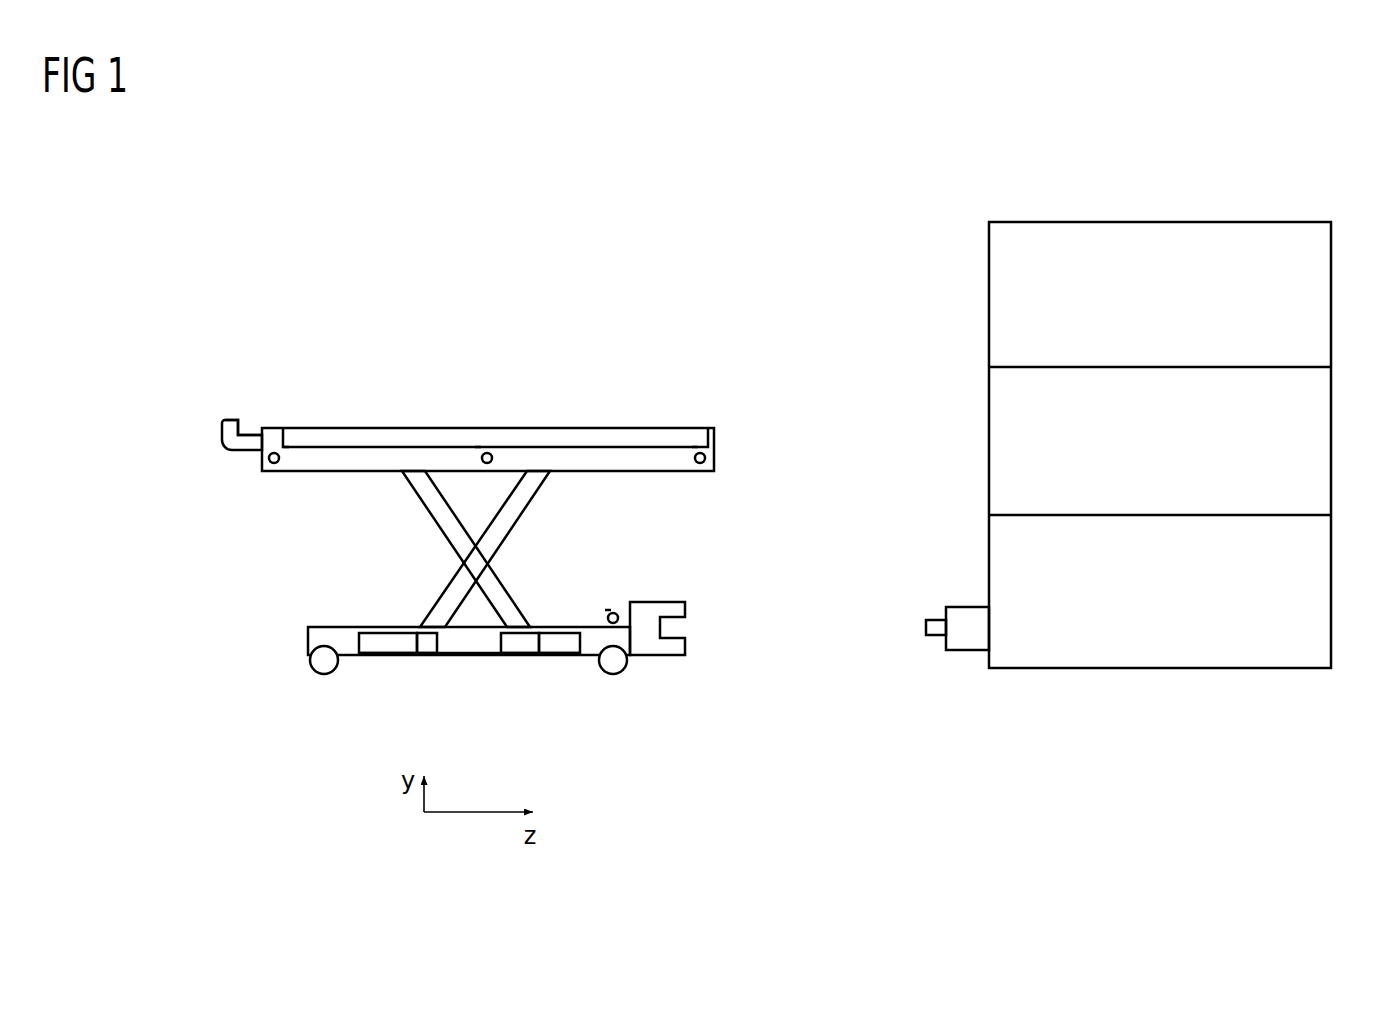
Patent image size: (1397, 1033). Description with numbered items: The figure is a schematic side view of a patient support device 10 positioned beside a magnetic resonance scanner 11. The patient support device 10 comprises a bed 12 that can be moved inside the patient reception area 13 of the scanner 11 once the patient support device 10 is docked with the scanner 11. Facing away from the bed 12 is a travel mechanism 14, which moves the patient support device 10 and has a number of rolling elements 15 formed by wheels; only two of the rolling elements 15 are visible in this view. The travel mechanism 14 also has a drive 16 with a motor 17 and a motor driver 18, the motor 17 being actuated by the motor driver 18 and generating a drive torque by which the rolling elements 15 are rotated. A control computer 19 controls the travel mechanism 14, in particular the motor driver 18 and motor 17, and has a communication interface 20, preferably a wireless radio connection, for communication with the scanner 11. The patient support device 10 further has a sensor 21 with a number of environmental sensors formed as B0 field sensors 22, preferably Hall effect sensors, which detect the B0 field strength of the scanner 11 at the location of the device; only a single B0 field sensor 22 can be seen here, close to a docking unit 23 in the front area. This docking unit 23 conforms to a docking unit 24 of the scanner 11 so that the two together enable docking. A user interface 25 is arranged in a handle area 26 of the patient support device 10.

The patient support device 10 is at (672, 348).
The magnetic resonance scanner 11 is at (1305, 202).
The bed 12 is at (583, 435).
The patient reception area 13 is at (998, 453).
The travel mechanism 14 is at (275, 687).
The rolling elements 15 is at (325, 677).
The drive 16 is at (498, 643).
The motor 17 is at (522, 658).
The motor driver 18 is at (562, 658).
The control computer 19 is at (388, 658).
The communication interface 20 is at (430, 658).
The sensor 21 is at (283, 447).
The B0 field sensor 22 is at (271, 453).
The docking unit 23 is at (672, 607).
The docking unit 24 is at (960, 605).
The user interface 25 is at (217, 412).
The handle area 26 is at (232, 448).